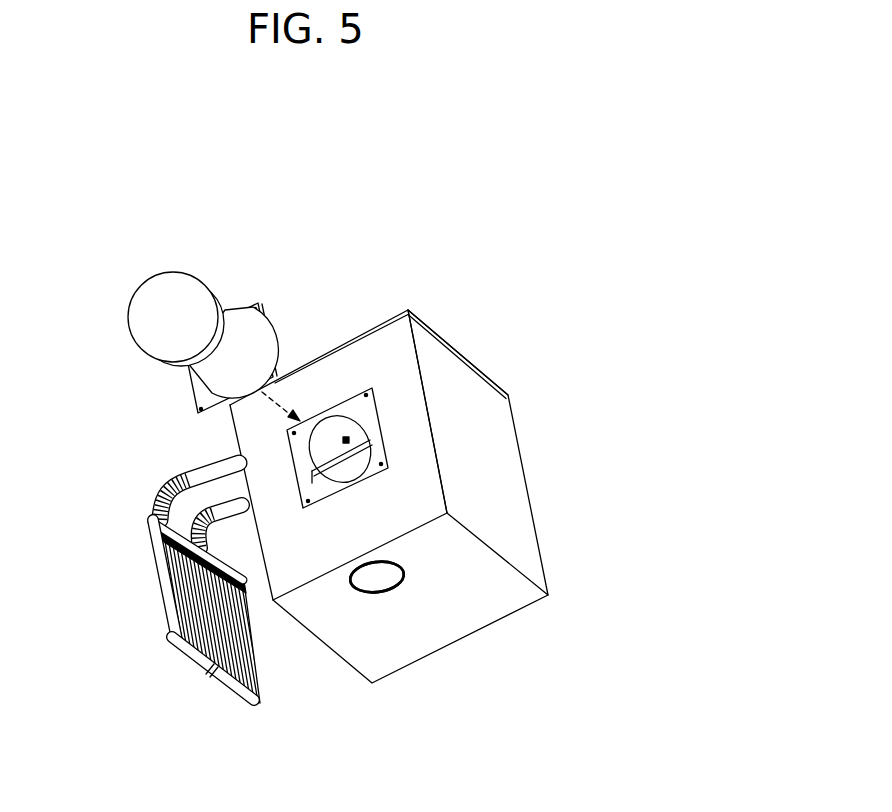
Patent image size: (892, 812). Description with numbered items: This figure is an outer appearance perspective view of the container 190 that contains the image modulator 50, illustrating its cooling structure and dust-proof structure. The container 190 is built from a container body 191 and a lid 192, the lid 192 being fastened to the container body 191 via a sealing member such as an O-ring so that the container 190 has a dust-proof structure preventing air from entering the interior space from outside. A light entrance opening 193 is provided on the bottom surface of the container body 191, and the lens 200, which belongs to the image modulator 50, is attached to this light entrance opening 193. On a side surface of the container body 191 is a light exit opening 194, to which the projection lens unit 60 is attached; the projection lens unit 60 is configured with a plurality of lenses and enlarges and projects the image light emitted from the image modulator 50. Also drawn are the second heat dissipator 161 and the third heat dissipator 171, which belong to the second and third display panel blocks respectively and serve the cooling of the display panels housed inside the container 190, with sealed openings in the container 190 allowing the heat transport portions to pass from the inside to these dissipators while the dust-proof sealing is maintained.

The image modulator 50 is at (373, 194).
The projection lens unit 60 is at (162, 309).
The second heat dissipator 161 is at (240, 687).
The third heat dissipator 171 is at (172, 620).
The container 190 is at (463, 496).
The container body 191 is at (478, 452).
The lid 192 is at (458, 345).
The light entrance opening 193 is at (395, 587).
The light exit opening 194 is at (377, 457).
The lens 200 is at (372, 585).